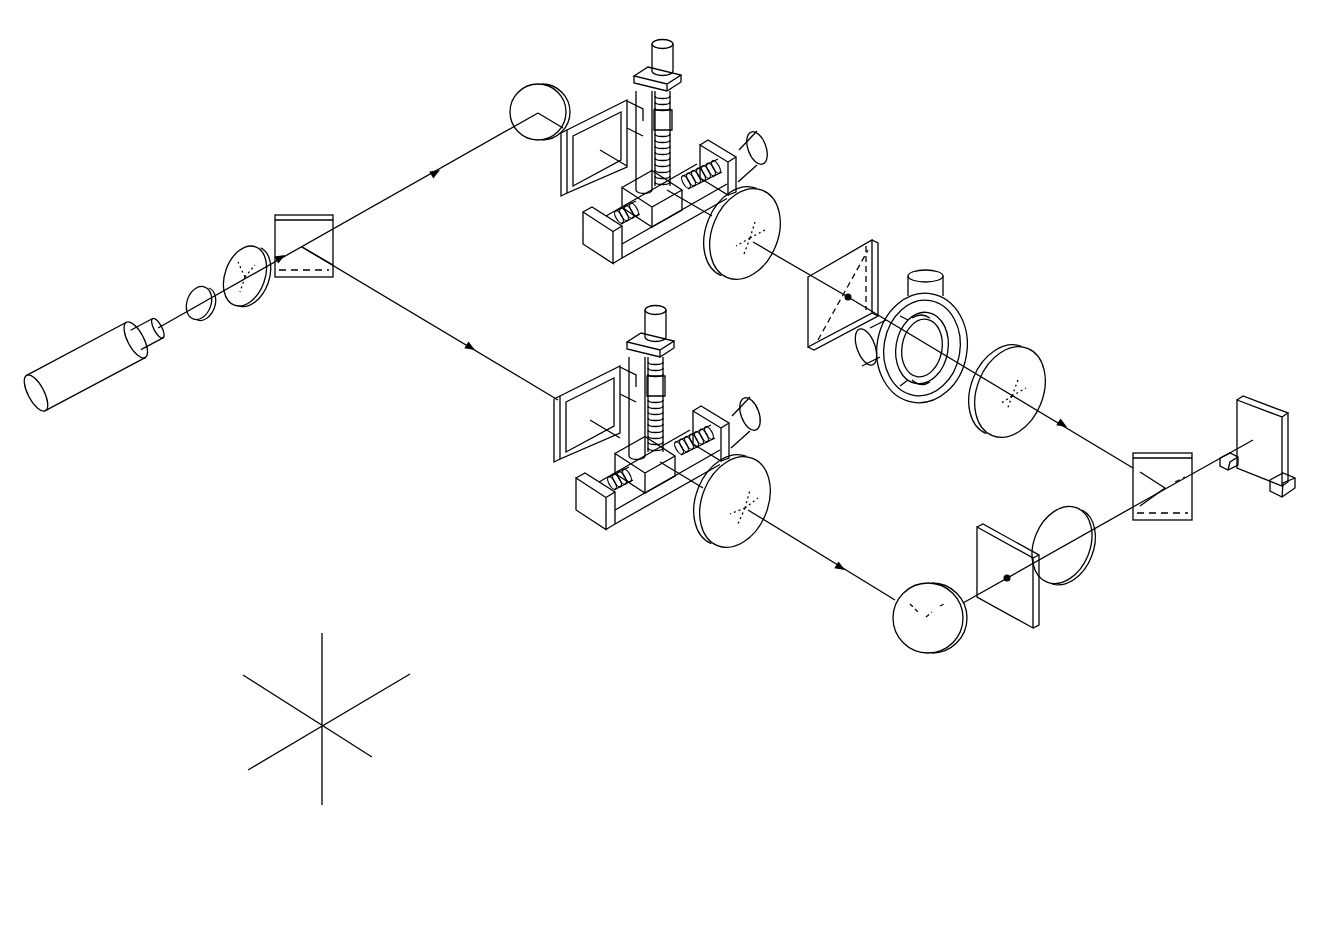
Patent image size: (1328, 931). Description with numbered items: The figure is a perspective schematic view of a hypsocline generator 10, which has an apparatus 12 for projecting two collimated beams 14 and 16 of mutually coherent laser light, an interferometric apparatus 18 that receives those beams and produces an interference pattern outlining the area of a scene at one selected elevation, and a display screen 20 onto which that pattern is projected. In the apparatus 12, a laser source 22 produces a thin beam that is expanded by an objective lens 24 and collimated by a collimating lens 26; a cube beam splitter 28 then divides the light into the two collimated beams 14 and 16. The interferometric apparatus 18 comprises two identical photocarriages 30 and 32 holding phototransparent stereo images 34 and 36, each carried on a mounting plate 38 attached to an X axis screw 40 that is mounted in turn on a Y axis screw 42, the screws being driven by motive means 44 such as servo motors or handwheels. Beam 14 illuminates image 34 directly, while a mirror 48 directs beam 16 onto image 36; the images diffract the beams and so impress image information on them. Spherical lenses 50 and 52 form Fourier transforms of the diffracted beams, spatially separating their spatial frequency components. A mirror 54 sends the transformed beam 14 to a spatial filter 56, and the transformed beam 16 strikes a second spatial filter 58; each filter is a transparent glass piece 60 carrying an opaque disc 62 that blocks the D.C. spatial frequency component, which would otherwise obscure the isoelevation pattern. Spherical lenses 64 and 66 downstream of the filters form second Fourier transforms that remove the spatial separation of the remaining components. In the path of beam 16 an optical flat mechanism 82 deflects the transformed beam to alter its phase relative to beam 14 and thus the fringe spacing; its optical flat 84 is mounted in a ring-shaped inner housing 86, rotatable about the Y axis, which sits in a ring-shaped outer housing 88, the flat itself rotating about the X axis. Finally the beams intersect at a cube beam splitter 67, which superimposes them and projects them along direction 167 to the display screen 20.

The hypsocline generator 10 is at (953, 111).
The apparatus for projecting two collimated beams 12 is at (268, 314).
The collimated beam 14 is at (436, 318).
The collimated beam 16 is at (430, 178).
The interferometric apparatus 18 is at (944, 244).
The display screen 20 is at (1250, 400).
The laser source 22 is at (92, 385).
The objective lens 24 is at (197, 320).
The collimating lens 26 is at (240, 256).
The cube beam splitter 28 is at (330, 214).
The photocarriage 30 is at (623, 494).
The photocarriage 32 is at (588, 266).
The phototransparent stereo image 34 is at (569, 416).
The phototransparent stereo image 36 is at (598, 151).
The mounting plate 38 is at (612, 109).
The X axis screw 40 is at (670, 86).
The Y axis screw 42 is at (680, 164).
The motive means 44 is at (673, 44).
The mirror 48 is at (545, 90).
The spherical lens 50 is at (763, 473).
The spherical lens 52 is at (770, 207).
The mirror 54 is at (930, 585).
The spatial filter 56 is at (1000, 505).
The second spatial filter 58 is at (874, 240).
The transparent glass piece 60 is at (878, 262).
The opaque disc 62 is at (846, 299).
The spherical lens 64 is at (1070, 508).
The spherical lens 66 is at (1040, 370).
The cube beam splitter 67 is at (1170, 455).
The optical flat mechanism 82 is at (971, 310).
The optical flat 84 is at (932, 349).
The ring-shaped inner housing 86 is at (960, 334).
The ring-shaped outer housing 88 is at (905, 406).
The direction 167 is at (1208, 470).